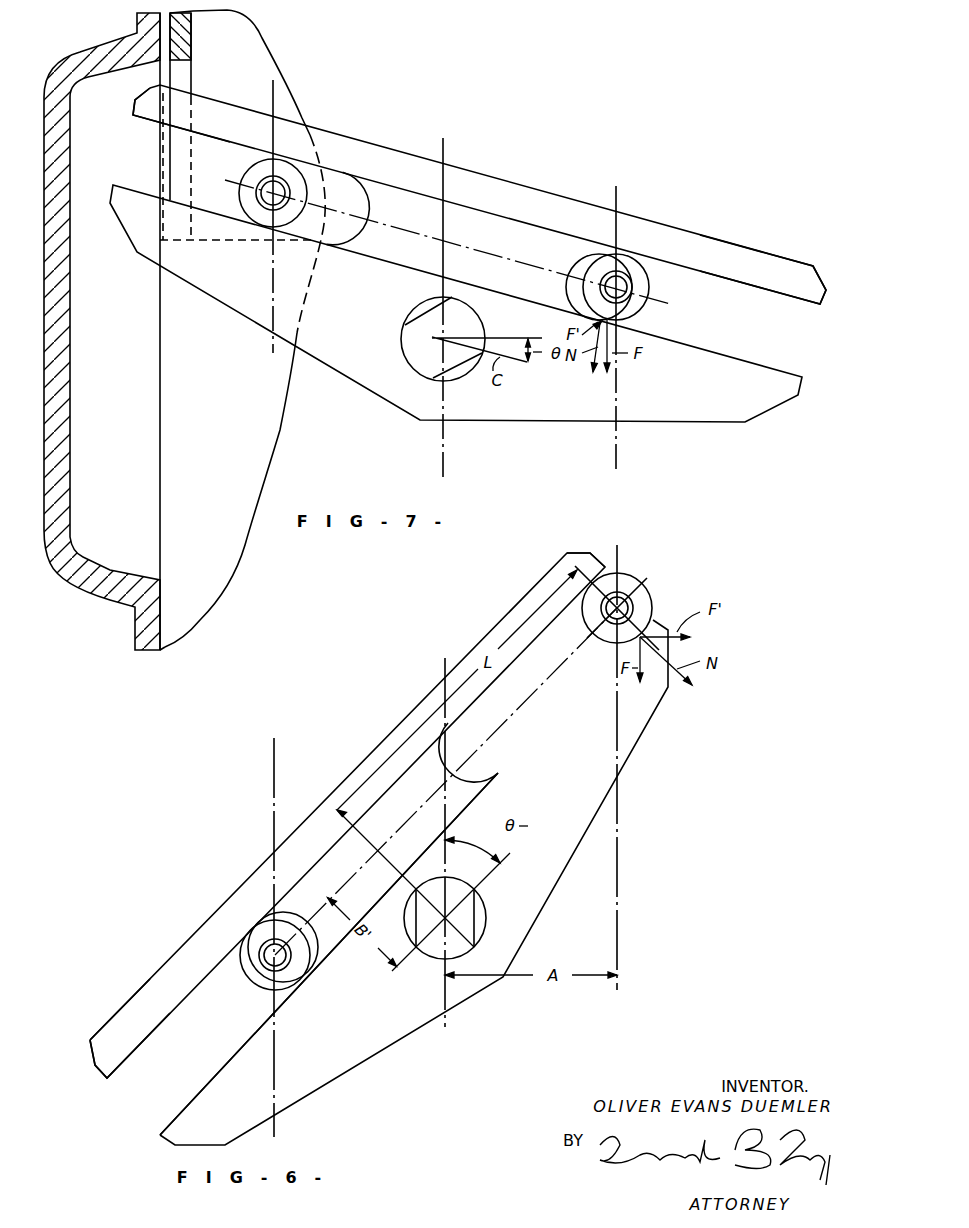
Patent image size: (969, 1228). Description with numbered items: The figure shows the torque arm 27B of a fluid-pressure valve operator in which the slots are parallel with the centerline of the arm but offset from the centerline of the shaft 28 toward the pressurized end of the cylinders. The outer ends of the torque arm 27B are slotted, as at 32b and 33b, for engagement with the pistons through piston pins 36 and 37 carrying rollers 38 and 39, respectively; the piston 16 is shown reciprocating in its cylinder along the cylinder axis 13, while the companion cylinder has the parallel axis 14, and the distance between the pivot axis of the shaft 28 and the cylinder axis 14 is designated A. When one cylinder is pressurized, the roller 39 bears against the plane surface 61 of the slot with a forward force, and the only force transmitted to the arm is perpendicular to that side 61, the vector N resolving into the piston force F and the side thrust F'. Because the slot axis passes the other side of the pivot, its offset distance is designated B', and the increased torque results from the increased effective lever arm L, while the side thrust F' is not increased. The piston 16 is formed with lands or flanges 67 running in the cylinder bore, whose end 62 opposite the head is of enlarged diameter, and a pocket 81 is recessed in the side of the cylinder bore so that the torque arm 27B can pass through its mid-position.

In FIG. 7, the cylinder axis 13 is at (273, 92).
In FIG. 6, the cylinder axis 13 is at (277, 747).
In FIG. 7, the cylinder axis 14 is at (618, 193).
In FIG. 6, the cylinder axis 14 is at (618, 830).
In FIG. 7, the piston 16 is at (263, 42).
In FIG. 7, the torque arm 27B is at (385, 146).
In FIG. 6, the torque arm 27B is at (357, 767).
In FIG. 7, the shaft 28 is at (423, 325).
In FIG. 6, the shaft 28 is at (430, 887).
In FIG. 7, the slot 32b is at (215, 138).
In FIG. 6, the slot 32b is at (190, 992).
In FIG. 7, the slot 33b is at (702, 272).
In FIG. 6, the slot 33b is at (542, 630).
In FIG. 7, the piston pin 36 is at (268, 183).
In FIG. 6, the piston pin 36 is at (278, 948).
In FIG. 7, the piston pin 37 is at (625, 286).
In FIG. 7, the roller 38 is at (250, 195).
In FIG. 6, the roller 38 is at (260, 982).
In FIG. 7, the roller 39 is at (605, 263).
In FIG. 7, the plane surface 61 is at (143, 191).
In FIG. 6, the plane surface 61 is at (548, 723).
In FIG. 7, the enlarged diameter cylinder end 62 is at (187, 623).
In FIG. 7, the flange 67 is at (167, 245).
In FIG. 7, the pocket 81 is at (125, 547).